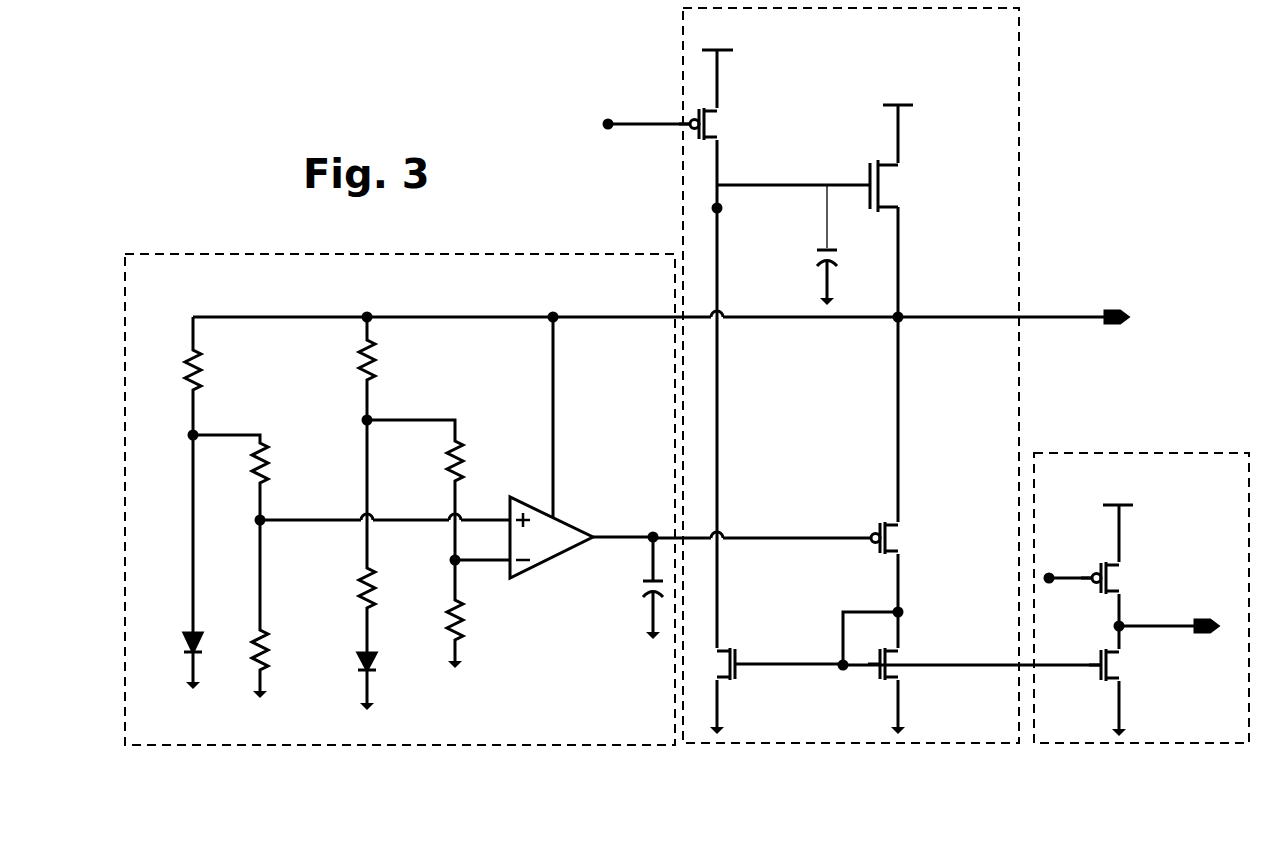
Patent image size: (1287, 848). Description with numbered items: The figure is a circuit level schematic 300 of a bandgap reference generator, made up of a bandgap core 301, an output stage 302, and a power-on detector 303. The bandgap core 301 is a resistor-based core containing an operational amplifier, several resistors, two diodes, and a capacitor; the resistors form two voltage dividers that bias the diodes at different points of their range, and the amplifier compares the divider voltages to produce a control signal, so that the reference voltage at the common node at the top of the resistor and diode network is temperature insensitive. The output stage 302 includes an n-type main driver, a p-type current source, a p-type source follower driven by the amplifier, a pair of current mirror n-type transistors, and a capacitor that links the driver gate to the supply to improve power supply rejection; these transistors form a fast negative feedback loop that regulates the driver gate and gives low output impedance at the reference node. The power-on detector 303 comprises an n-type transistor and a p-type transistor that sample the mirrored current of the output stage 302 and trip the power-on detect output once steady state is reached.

The circuit level schematic 300 is at (687, 376).
The bandgap core 301 is at (400, 499).
The output stage 302 is at (802, 375).
The power-on detector 303 is at (1141, 598).